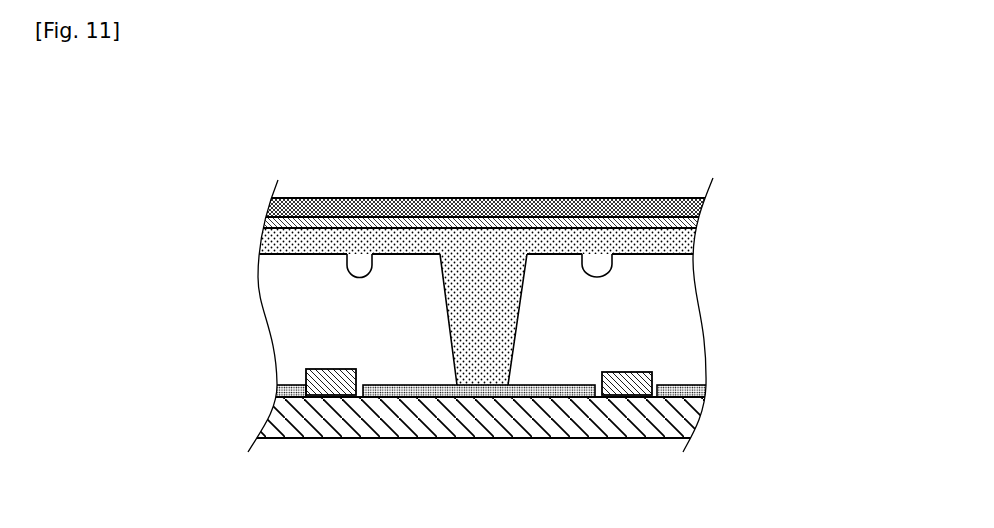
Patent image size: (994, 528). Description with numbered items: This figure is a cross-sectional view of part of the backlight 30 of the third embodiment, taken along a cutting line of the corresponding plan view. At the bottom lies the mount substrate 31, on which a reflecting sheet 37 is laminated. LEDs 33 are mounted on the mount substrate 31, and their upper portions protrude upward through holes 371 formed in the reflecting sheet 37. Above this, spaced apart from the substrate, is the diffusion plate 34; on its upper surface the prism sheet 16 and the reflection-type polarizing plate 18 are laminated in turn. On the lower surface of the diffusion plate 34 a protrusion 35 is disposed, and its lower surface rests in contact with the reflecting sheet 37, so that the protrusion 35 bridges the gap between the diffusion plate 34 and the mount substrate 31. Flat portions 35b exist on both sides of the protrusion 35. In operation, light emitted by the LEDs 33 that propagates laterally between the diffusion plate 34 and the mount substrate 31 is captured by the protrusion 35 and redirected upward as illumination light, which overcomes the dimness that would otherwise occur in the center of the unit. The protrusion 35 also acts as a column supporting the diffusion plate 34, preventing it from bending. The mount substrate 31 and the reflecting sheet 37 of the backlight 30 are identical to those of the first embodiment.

The backlight 30 is at (734, 182).
The reflection-type polarizing plate 18 is at (702, 205).
The prism sheet 16 is at (700, 218).
The diffusion plate 34 is at (278, 242).
The protrusion 35 is at (467, 275).
The flat portion 35b is at (353, 263).
The LED 33 is at (305, 375).
The mount substrate 31 is at (263, 422).
The reflecting sheet 37 is at (707, 388).
The hole 371 is at (653, 438).